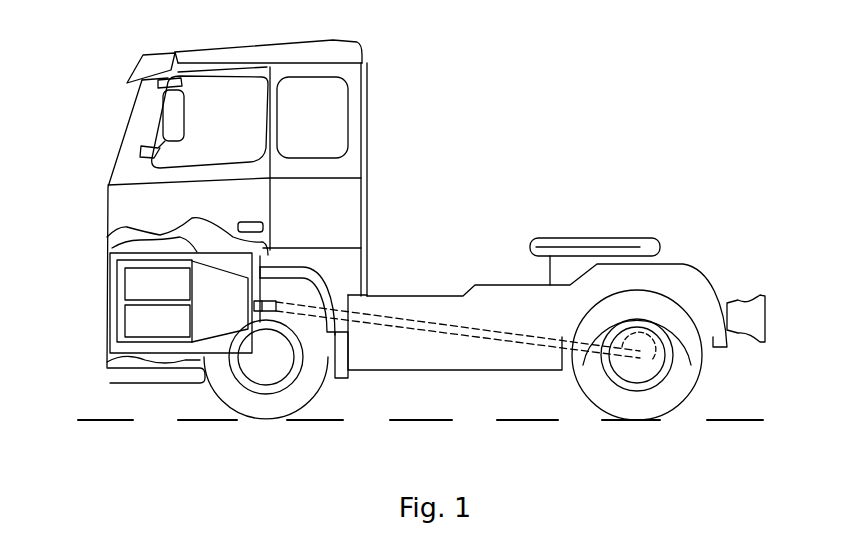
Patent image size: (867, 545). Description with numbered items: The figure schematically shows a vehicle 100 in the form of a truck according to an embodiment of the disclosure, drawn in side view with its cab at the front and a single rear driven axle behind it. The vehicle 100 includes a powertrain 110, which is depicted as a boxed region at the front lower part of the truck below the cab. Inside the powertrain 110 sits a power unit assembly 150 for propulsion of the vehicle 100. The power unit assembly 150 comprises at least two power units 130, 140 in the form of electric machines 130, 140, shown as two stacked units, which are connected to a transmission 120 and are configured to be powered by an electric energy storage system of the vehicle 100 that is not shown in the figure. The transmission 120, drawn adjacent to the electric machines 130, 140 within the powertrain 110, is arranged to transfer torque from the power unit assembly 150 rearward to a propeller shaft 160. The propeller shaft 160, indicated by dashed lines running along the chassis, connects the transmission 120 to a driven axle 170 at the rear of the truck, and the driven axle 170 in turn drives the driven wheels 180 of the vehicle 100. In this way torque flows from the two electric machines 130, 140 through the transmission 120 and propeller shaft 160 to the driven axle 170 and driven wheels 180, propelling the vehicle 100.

The vehicle 100 is at (620, 178).
The powertrain 110 is at (110, 253).
The transmission 120 is at (235, 332).
The power unit 130 is at (147, 278).
The power unit 140 is at (147, 320).
The power unit assembly 150 is at (180, 341).
The propeller shaft 160 is at (421, 320).
The driven axle 170 is at (638, 355).
The driven wheels 180 is at (638, 403).